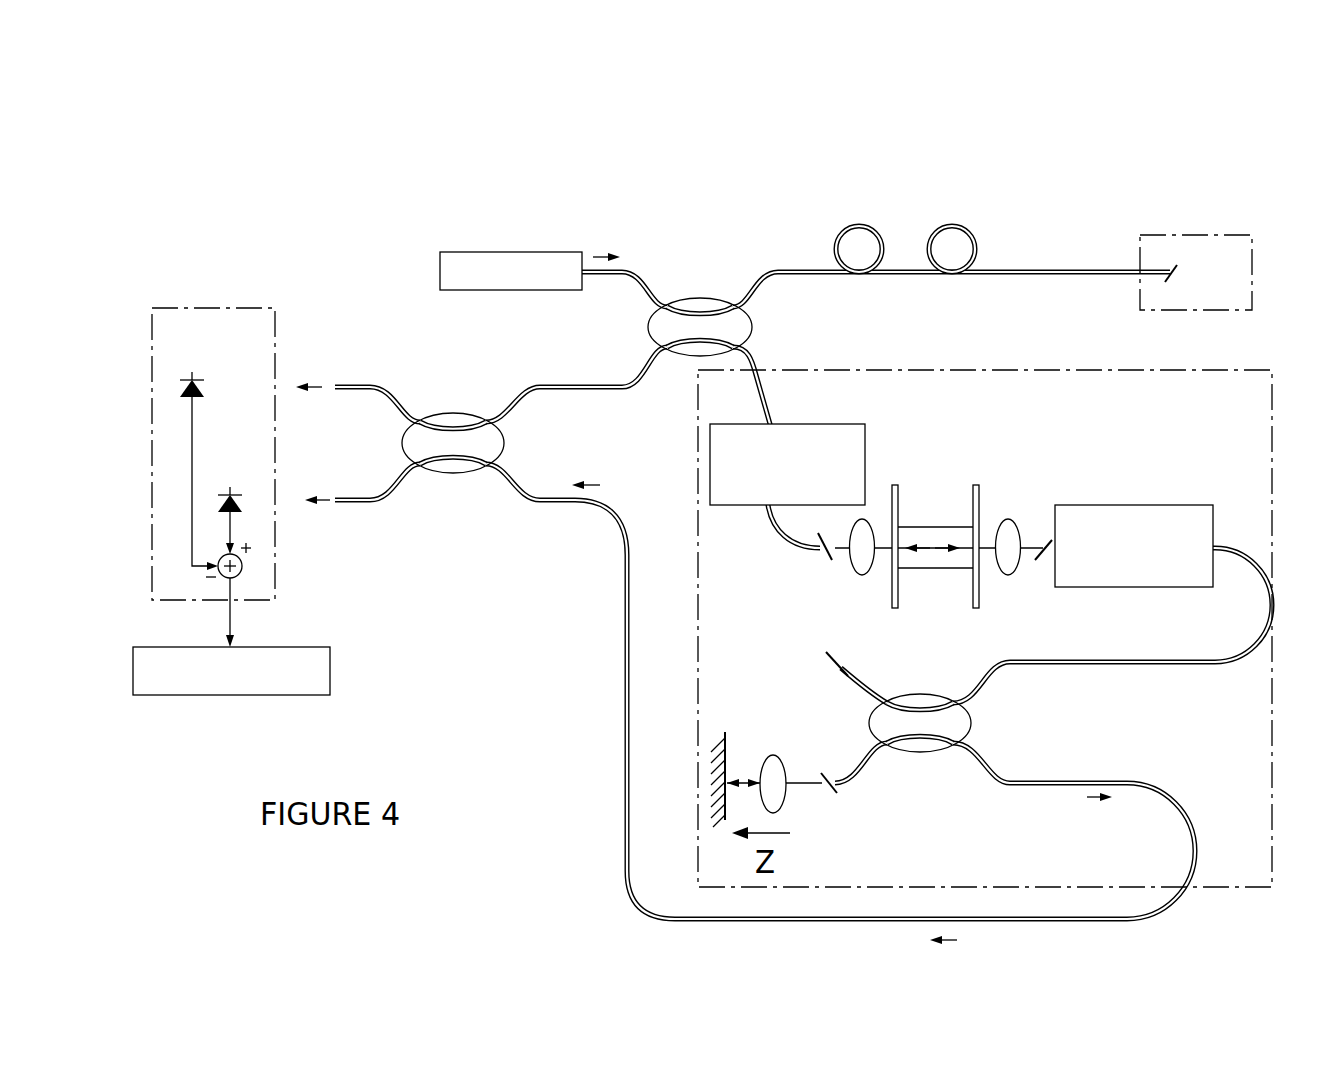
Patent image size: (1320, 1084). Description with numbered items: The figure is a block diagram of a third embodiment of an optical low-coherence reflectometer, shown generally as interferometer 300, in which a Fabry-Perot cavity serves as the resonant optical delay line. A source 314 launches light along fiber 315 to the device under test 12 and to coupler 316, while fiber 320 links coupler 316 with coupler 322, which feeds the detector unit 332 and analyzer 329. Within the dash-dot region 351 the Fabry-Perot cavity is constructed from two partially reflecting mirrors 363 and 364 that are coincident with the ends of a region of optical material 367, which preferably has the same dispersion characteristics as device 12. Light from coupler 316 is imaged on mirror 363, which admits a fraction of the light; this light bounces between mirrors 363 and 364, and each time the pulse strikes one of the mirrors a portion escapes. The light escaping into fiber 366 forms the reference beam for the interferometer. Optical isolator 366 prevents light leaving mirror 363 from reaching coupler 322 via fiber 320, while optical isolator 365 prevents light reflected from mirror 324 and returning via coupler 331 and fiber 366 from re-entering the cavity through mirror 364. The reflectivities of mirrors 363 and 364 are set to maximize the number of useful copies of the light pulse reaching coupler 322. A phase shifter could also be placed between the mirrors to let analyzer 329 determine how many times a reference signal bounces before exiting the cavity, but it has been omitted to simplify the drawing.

The optical low-coherence reflectometer 300 is at (444, 157).
The optical source 314 is at (445, 258).
The coupler 316 is at (700, 312).
The optical fiber 315 is at (1018, 272).
The device 12 is at (1157, 243).
The scanning interferometer unit 351 is at (1013, 372).
The optical isolator / fiber 366 is at (865, 430).
The region of optical material 367 is at (953, 535).
The partially reflecting mirror 363 is at (893, 587).
The partially reflecting mirror 364 is at (973, 580).
The optical isolator 365 is at (1152, 580).
The coupler 331 is at (963, 720).
The mirror 324 is at (726, 743).
The detector unit 332 is at (265, 340).
The analyzer 329 is at (328, 690).
The coupler 322 is at (453, 400).
The fiber 320 is at (572, 388).